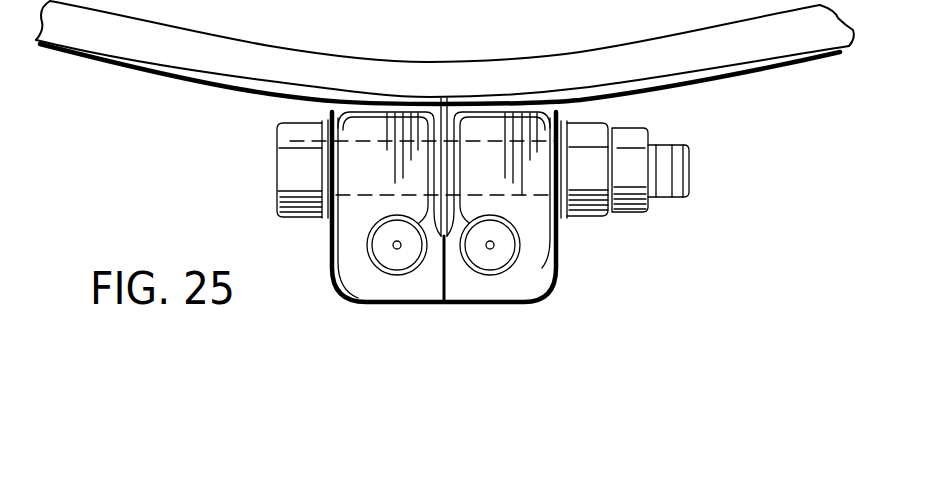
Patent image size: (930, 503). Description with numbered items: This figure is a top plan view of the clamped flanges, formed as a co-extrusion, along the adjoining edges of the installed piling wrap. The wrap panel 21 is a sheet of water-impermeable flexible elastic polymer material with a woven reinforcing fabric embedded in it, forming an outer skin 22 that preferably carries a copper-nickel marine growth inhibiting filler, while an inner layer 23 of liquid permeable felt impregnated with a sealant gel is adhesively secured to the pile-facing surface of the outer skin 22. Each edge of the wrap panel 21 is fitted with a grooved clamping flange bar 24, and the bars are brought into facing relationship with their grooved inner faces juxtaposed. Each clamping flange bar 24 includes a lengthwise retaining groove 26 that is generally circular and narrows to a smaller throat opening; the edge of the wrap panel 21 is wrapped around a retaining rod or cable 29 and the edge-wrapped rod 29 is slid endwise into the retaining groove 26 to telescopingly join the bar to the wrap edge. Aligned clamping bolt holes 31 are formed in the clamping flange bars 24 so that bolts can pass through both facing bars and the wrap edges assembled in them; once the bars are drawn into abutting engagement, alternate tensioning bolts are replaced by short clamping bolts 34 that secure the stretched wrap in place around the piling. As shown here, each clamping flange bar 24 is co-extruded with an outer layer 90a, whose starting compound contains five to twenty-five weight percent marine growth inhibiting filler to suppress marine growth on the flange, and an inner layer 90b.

The wrap panel 21 is at (183, 84).
The outer skin 22 is at (688, 87).
The inner layer 23 is at (735, 74).
The clamping flange bar 24 is at (558, 241).
The retaining groove 26 is at (502, 255).
The retaining rod or cable 29 is at (397, 258).
The clamping bolt hole 31 is at (333, 219).
The short clamping bolt 34 is at (689, 192).
The outer layer 90a is at (470, 306).
The inner layer 90b is at (416, 286).